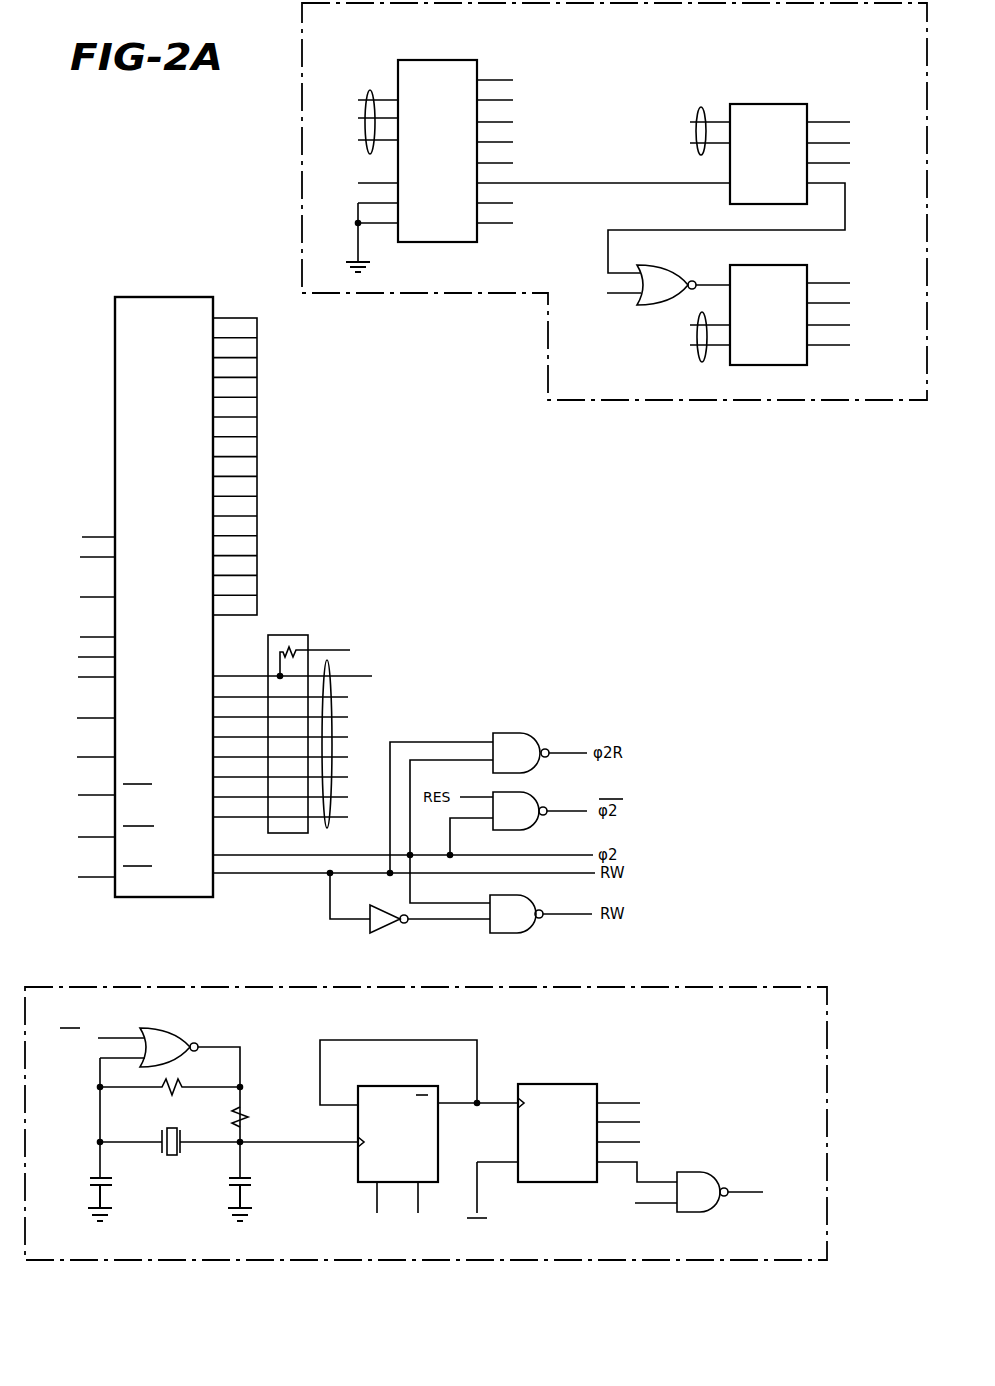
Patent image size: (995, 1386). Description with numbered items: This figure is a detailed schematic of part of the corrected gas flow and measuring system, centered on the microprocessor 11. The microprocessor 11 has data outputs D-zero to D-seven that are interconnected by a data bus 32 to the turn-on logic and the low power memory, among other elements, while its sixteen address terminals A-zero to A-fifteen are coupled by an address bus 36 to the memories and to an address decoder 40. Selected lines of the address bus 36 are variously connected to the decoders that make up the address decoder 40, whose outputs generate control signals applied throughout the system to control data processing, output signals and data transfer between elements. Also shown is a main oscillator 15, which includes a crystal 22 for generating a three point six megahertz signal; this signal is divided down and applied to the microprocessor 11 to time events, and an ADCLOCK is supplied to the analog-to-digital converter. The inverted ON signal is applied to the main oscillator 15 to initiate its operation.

The microprocessor 11 is at (168, 293).
The address bus 36 is at (257, 457).
The data bus 32 is at (327, 828).
The address decoder 40 is at (614, 201).
The main oscillator 15 is at (426, 1123).
The crystal 22 is at (182, 1136).